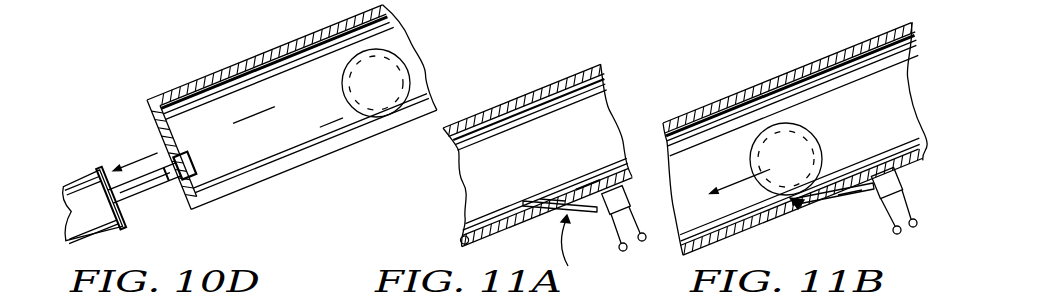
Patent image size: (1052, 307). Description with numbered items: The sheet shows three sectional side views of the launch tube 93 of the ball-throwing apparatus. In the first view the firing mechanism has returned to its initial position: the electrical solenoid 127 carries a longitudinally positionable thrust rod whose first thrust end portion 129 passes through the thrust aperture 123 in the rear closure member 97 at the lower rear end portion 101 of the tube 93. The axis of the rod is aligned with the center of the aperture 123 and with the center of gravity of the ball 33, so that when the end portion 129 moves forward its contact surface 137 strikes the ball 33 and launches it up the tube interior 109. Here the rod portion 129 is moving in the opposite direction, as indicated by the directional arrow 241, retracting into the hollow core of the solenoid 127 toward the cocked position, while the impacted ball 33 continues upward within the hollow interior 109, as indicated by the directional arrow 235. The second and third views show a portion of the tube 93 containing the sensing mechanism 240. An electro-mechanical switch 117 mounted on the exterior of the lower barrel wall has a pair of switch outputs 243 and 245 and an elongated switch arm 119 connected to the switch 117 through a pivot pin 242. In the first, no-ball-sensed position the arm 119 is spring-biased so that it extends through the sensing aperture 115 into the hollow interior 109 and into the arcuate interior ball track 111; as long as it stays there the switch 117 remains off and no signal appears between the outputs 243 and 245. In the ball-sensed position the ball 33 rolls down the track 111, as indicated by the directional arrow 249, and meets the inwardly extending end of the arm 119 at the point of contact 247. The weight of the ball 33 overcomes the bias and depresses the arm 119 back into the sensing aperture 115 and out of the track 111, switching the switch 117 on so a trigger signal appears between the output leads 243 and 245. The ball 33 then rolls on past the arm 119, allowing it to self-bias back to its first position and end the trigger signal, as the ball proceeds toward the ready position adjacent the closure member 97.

In FIG. 10D, the ball 33 is at (392, 72).
In FIG. 11B, the ball 33 is at (800, 142).
In FIG. 10D, the launch tube 93 is at (360, 7).
In FIG. 11A, the launch tube 93 is at (558, 74).
In FIG. 11B, the launch tube 93 is at (794, 58).
In FIG. 10D, the rear closure member 97 is at (151, 115).
In FIG. 11A, the rear closure member 97 is at (527, 102).
In FIG. 11B, the rear closure member 97 is at (770, 80).
In FIG. 10D, the lower rear end portion 101 is at (254, 61).
In FIG. 10D, the tube interior 109 is at (389, 30).
In FIG. 11A, the tube interior 109 is at (533, 155).
In FIG. 11B, the tube interior 109 is at (855, 106).
In FIG. 11A, the interior ball track 111 is at (464, 236).
In FIG. 11B, the interior ball track 111 is at (697, 233).
In FIG. 11A, the sensing aperture 115 is at (535, 214).
In FIG. 11B, the sensing aperture 115 is at (851, 174).
In FIG. 11A, the electrical switch 117 is at (628, 200).
In FIG. 11B, the electrical switch 117 is at (902, 182).
In FIG. 11A, the switch arm 119 is at (550, 200).
In FIG. 11B, the switch arm 119 is at (835, 198).
In FIG. 10D, the thrust aperture 123 is at (180, 151).
In FIG. 10D, the electrical solenoid 127 is at (80, 182).
In FIG. 10D, the first thrust end portion 129 is at (141, 193).
In FIG. 10D, the contact surface 137 is at (236, 152).
In FIG. 10D, the directional arrow 235 is at (428, 72).
In FIG. 11A, the sensing mechanism 240 is at (584, 247).
In FIG. 10D, the directional arrow 241 is at (156, 152).
In FIG. 11A, the pivot pin 242 is at (589, 201).
In FIG. 11A, the switch output 243 is at (613, 224).
In FIG. 11B, the switch output 243 is at (889, 214).
In FIG. 11A, the switch output 245 is at (647, 236).
In FIG. 11B, the switch output 245 is at (917, 228).
In FIG. 11B, the point of contact 247 is at (803, 210).
In FIG. 11B, the directional arrow 249 is at (748, 171).